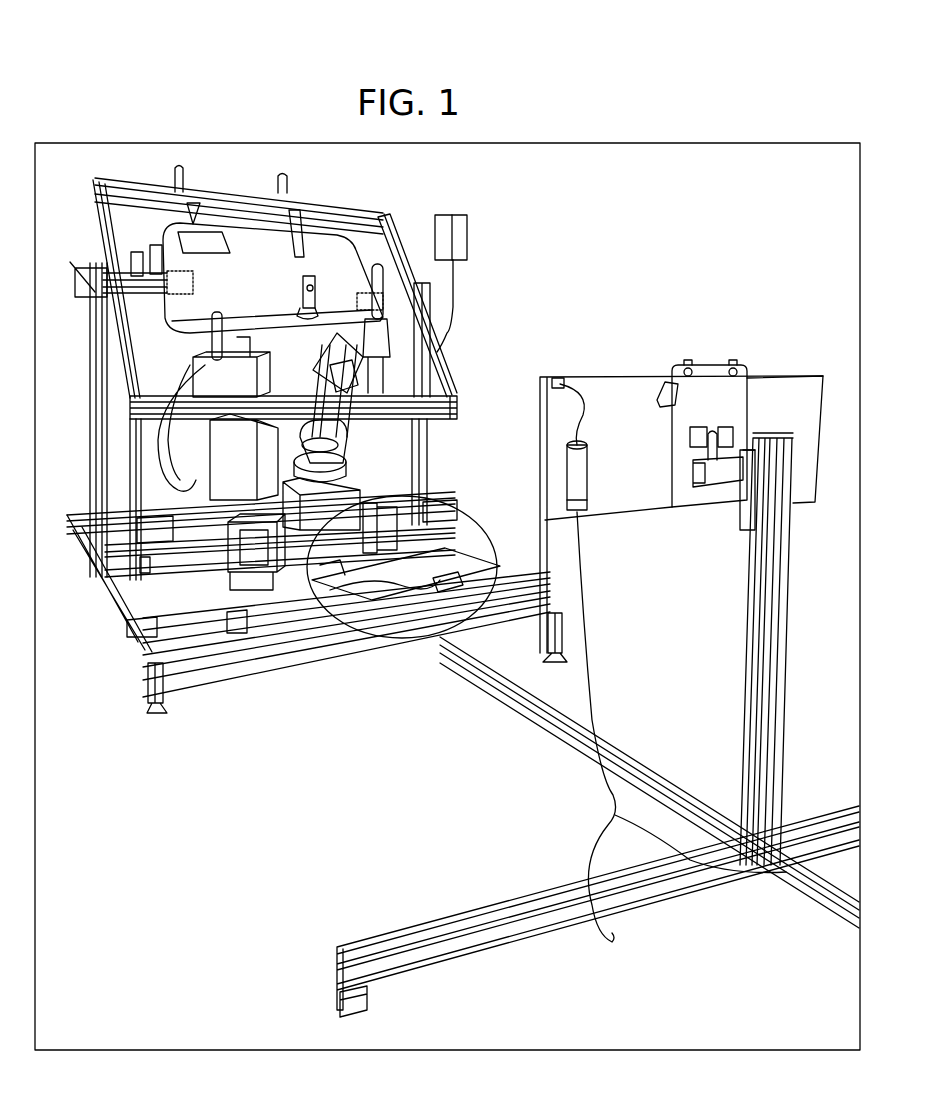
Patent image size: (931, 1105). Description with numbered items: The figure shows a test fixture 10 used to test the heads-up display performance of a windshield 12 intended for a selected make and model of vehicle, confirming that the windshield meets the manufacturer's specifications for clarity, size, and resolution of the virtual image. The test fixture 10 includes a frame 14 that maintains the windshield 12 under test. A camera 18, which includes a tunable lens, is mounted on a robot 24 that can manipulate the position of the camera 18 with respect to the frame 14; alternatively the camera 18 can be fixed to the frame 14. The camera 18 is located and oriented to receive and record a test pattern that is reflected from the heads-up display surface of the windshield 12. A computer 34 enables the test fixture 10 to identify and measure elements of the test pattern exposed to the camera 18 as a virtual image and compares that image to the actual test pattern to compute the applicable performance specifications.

The test fixture 10 is at (382, 467).
The windshield 12 is at (323, 253).
The frame 14 is at (185, 557).
The camera 18 is at (300, 289).
The robot 24 is at (347, 365).
The computer 34 is at (270, 575).